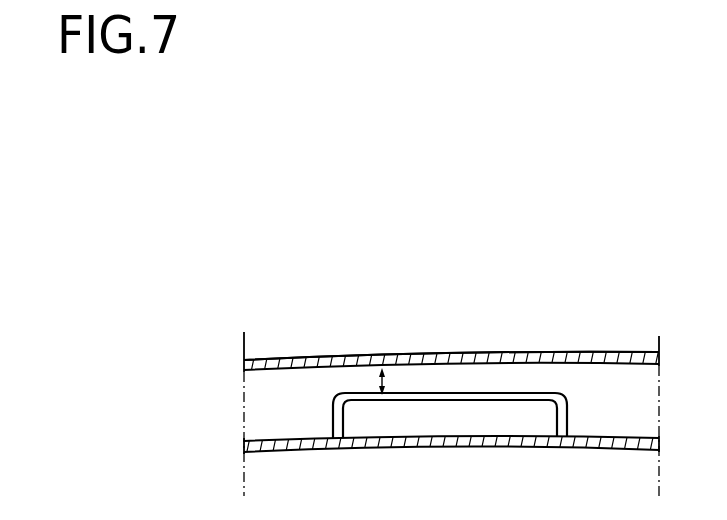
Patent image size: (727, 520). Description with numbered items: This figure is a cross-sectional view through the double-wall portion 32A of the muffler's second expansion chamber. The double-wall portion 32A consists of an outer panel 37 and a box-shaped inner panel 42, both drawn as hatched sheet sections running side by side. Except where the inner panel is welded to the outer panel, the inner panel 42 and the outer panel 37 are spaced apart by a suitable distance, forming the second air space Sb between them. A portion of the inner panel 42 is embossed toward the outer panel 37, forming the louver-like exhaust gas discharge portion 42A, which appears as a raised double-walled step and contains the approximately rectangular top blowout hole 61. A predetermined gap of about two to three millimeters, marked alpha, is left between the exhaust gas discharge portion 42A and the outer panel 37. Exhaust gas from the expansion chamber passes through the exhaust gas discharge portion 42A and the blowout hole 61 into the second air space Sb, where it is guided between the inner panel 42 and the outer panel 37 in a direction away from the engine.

The double-wall portion 32A is at (273, 350).
The outer panel 37 is at (528, 352).
The inner panel 42 is at (283, 435).
The exhaust gas discharge portion 42A is at (425, 392).
The blowout hole 61 is at (470, 416).
The second air space Sb is at (602, 412).